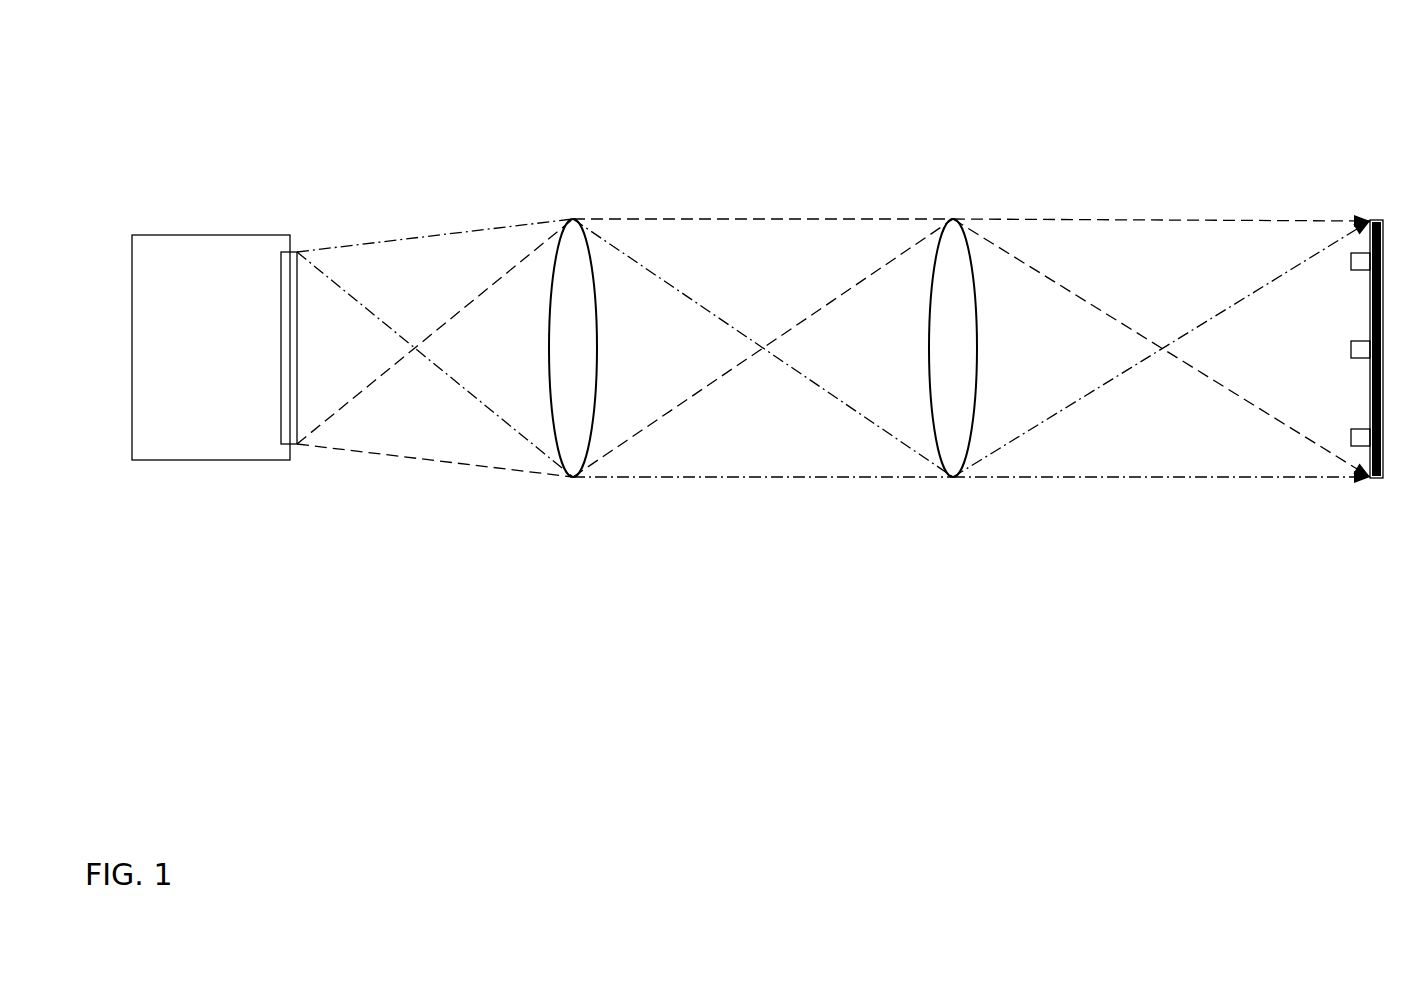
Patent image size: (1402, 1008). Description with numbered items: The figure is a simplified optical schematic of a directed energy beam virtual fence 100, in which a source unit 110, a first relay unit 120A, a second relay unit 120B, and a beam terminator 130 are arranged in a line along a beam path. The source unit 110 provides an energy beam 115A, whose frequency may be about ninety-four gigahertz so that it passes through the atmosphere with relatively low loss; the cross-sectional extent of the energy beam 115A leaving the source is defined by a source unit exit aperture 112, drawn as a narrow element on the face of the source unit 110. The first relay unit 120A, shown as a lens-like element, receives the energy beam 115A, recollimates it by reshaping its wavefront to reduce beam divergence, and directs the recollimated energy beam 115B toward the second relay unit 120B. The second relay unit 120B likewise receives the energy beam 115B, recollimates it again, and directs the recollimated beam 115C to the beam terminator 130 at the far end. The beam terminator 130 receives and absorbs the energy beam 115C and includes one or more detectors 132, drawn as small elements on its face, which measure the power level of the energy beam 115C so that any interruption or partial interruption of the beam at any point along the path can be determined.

The directed energy beam virtual fence 100 is at (193, 81).
The source unit 110 is at (212, 460).
The source unit exit aperture 112 is at (297, 422).
The energy beam 115A is at (400, 216).
The recollimated energy beam 115B is at (772, 202).
The recollimated beam 115C is at (1152, 202).
The first relay unit 120A is at (592, 430).
The second relay unit 120B is at (972, 430).
The beam terminator 130 is at (1375, 478).
The detectors 132 is at (1351, 429).